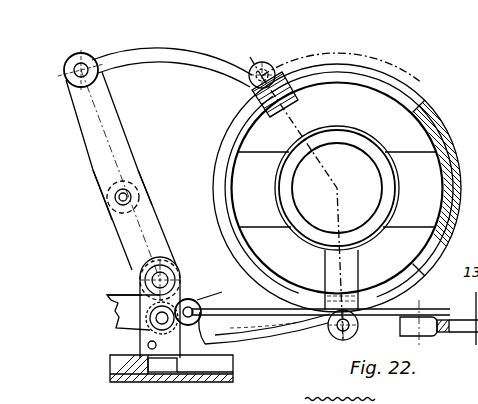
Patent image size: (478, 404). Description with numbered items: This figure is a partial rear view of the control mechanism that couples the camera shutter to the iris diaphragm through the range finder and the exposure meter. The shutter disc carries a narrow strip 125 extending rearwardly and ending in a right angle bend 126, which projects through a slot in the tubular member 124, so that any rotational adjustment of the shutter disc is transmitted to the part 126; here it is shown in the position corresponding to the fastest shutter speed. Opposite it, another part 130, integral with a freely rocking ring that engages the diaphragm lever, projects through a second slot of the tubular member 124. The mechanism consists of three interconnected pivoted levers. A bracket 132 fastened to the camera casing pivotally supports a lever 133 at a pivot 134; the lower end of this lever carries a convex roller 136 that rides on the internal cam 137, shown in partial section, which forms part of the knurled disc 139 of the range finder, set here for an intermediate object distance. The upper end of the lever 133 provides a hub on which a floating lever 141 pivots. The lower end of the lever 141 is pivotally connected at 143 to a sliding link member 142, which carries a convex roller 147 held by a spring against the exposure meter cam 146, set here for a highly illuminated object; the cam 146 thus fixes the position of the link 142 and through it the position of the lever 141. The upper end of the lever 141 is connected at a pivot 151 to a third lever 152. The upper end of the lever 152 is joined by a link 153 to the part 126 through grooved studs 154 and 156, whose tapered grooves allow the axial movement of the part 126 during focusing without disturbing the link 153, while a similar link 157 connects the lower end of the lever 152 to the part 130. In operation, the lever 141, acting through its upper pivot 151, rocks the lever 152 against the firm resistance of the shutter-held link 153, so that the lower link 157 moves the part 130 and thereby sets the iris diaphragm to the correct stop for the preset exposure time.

The tubular member 124 is at (403, 100).
The narrow strip 125 is at (294, 100).
The right angle bend 126 is at (281, 60).
The part integral with ring 130 is at (362, 294).
The bracket 132 is at (112, 315).
The lever 133 is at (148, 342).
The pivot 134 is at (147, 302).
The convex roller 136 is at (178, 366).
The internal cam 137 is at (112, 366).
The knurled disc 139 is at (115, 381).
The lever 141 is at (135, 258).
The sliding link member 142 is at (414, 308).
The pivotal connection 143 is at (198, 302).
The cam 146 is at (439, 331).
The convex roller 147 is at (406, 326).
The pivot 151 is at (117, 198).
The lever 152 is at (91, 156).
The link 153 is at (157, 64).
The grooved stud 154 is at (88, 50).
The grooved stud 156 is at (268, 62).
The link 157 is at (268, 338).